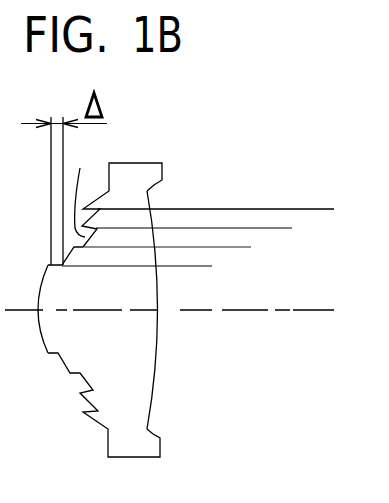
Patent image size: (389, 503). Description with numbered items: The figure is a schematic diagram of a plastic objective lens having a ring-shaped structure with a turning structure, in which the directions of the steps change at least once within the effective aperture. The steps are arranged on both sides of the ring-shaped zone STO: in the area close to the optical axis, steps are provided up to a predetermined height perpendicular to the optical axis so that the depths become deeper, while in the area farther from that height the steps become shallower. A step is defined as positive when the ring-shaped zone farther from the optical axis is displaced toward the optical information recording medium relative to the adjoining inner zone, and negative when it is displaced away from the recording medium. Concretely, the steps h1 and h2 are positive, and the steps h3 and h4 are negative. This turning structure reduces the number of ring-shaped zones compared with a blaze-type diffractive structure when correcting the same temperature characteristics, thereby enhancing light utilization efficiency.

The ring-shaped zone STO is at (95, 182).
The step h1 is at (200, 266).
The step h2 is at (244, 247).
The step h3 is at (283, 228).
The step h4 is at (323, 209).